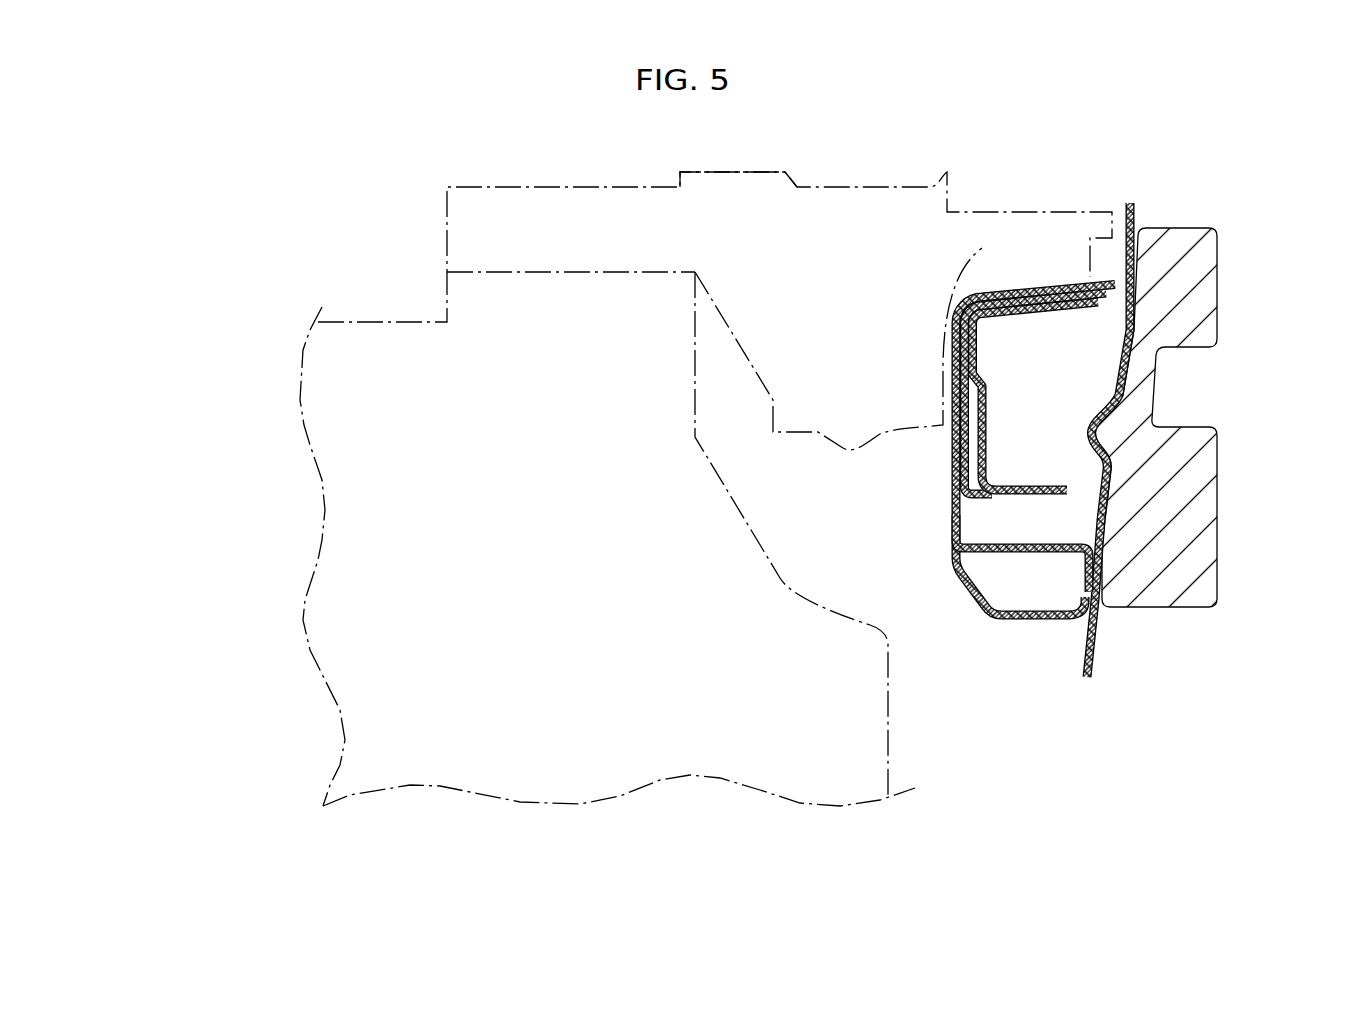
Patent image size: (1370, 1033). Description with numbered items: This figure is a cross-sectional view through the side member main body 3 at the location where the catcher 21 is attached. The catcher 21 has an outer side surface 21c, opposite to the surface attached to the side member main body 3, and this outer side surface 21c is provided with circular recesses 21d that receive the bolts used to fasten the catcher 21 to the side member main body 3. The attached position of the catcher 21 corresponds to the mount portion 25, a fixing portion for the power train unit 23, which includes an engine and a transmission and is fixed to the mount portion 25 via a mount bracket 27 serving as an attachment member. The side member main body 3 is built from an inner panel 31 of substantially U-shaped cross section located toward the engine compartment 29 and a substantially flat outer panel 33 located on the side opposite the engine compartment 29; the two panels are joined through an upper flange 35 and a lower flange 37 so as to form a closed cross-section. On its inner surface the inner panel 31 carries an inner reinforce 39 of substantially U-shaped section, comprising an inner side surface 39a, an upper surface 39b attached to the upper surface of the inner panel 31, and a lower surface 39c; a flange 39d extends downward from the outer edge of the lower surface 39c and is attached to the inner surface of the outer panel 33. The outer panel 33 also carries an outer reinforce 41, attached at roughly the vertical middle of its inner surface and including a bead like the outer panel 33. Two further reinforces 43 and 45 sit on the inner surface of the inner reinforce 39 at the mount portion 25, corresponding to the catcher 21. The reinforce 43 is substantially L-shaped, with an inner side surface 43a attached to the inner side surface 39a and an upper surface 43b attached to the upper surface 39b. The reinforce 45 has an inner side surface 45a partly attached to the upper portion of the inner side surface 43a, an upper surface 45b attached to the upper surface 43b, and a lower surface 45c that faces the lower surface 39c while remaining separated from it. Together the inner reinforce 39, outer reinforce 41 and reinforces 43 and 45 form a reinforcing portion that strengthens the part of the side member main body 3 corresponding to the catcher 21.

The side member main body 3 is at (982, 614).
The catcher 21 is at (1205, 417).
The outer side surface 21c is at (1218, 553).
The circular recesses 21d is at (1157, 383).
The power train unit 23 is at (757, 547).
The mount portion 25 is at (1057, 290).
The mount bracket 27 is at (882, 187).
The engine compartment 29 is at (389, 237).
The inner panel 31 is at (962, 577).
The outer panel 33 is at (1182, 424).
The upper flange 35 is at (1135, 212).
The lower flange 37 is at (1097, 668).
The inner reinforce 39 is at (1033, 553).
The inner side surface 39a is at (950, 496).
The upper surface 39b is at (1073, 302).
The lower surface 39c is at (962, 545).
The flange 39d is at (1087, 570).
The outer reinforce 41 is at (1090, 505).
The reinforce 43 is at (960, 457).
The inner side surface 43a is at (947, 372).
The upper surface 43b is at (1017, 290).
The reinforce 45 is at (978, 428).
The inner side surface 45a is at (987, 405).
The upper surface 45b is at (1020, 318).
The lower surface 45c is at (1050, 485).